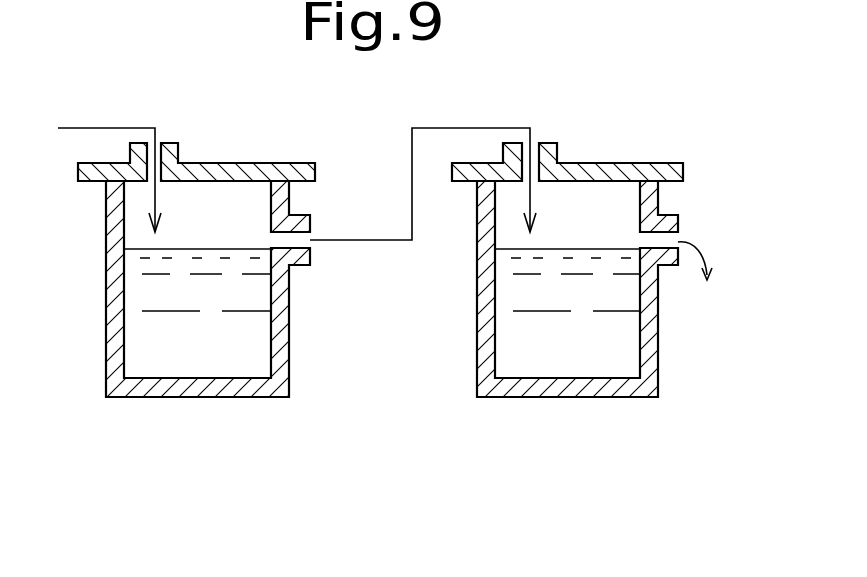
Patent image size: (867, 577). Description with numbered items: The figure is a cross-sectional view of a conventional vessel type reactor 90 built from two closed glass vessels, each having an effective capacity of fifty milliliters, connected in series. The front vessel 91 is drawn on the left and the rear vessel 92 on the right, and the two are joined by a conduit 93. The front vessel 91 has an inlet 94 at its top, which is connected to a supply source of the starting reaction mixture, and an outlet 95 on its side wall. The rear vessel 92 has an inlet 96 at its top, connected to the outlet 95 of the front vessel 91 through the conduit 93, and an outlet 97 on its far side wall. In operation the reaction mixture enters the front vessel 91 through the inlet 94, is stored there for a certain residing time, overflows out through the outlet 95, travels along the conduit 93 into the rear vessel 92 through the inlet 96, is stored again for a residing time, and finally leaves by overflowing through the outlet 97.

The reactor 90 is at (340, 152).
The front vessel 91 is at (222, 398).
The rear vessel 92 is at (594, 398).
The conduit 93 is at (362, 242).
The inlet 94 is at (157, 145).
The outlet 95 is at (310, 236).
The inlet 96 is at (533, 142).
The outlet 97 is at (680, 238).